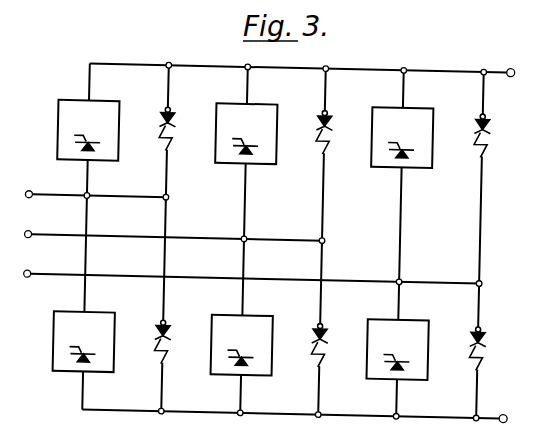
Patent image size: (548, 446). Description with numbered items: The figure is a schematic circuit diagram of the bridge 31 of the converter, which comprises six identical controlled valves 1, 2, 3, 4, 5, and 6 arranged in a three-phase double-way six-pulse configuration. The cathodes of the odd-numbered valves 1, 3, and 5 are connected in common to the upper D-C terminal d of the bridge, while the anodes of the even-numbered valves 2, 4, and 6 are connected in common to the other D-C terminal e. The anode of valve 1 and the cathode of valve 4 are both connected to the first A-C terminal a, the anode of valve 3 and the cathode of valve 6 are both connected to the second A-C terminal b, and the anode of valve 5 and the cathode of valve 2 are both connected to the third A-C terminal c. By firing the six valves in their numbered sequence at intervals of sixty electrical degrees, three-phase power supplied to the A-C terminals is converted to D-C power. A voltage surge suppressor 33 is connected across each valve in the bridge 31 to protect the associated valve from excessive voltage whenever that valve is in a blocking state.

The controlled valve 1 is at (72, 104).
The controlled valve 2 is at (418, 317).
The controlled valve 3 is at (232, 104).
The controlled valve 4 is at (104, 314).
The controlled valve 5 is at (386, 105).
The controlled valve 6 is at (260, 316).
The bridge 31 is at (294, 231).
The voltage surge suppressor 33 is at (172, 132).